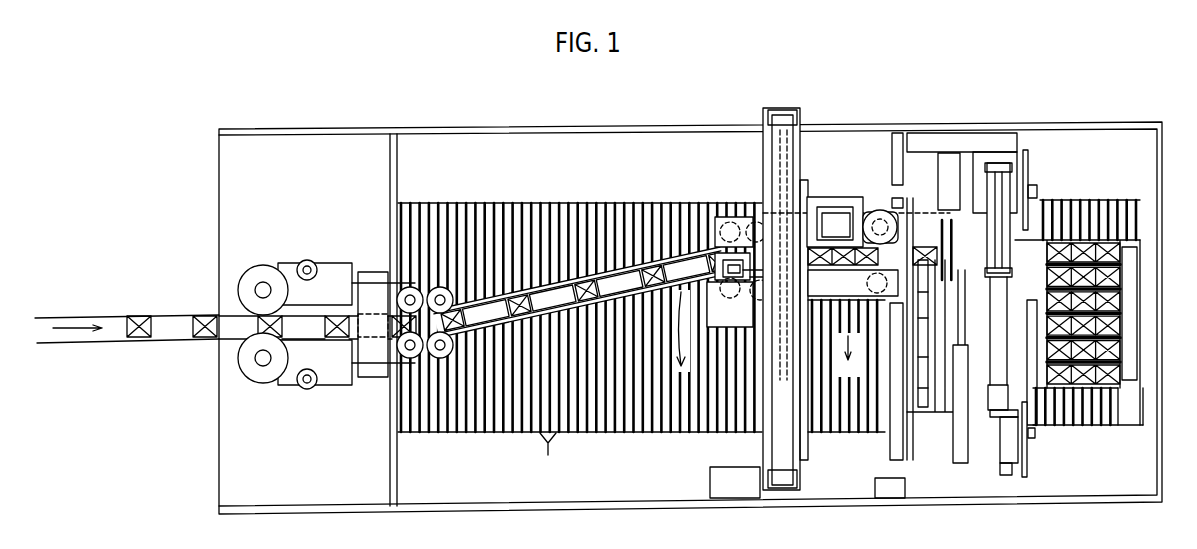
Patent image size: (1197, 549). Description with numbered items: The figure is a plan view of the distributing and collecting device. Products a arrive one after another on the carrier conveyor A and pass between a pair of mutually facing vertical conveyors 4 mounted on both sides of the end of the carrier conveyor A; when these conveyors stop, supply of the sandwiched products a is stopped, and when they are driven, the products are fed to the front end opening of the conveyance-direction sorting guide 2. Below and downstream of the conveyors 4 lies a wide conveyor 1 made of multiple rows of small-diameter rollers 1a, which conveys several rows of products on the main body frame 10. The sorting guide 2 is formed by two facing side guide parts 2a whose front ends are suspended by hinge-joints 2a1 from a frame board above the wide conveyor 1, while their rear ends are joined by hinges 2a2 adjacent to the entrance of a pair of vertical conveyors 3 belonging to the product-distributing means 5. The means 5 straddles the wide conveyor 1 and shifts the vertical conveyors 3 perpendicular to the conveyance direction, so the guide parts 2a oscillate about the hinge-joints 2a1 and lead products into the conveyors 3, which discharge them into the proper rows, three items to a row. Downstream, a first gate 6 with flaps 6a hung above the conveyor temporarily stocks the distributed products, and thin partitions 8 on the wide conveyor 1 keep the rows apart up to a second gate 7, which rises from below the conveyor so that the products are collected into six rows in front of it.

The wide conveyor 1 is at (613, 432).
The small-diameter rollers 1a is at (551, 455).
The conveyance-direction sorting guide 2 is at (600, 268).
The side guide parts 2a is at (489, 296).
The hinge-joints 2a1 is at (429, 286).
The hinges 2a2 is at (713, 218).
The vertical conveyors 3 is at (876, 212).
The vertical conveyors 4 is at (335, 282).
The product-distributing means 5 is at (818, 178).
The first gate 6 is at (1028, 172).
The flaps 6a is at (1017, 253).
The second gate 7 is at (1123, 383).
The thin partitions 8 is at (1037, 382).
The main body frame 10 is at (412, 508).
The carrier conveyor A is at (108, 343).
The products a is at (138, 315).